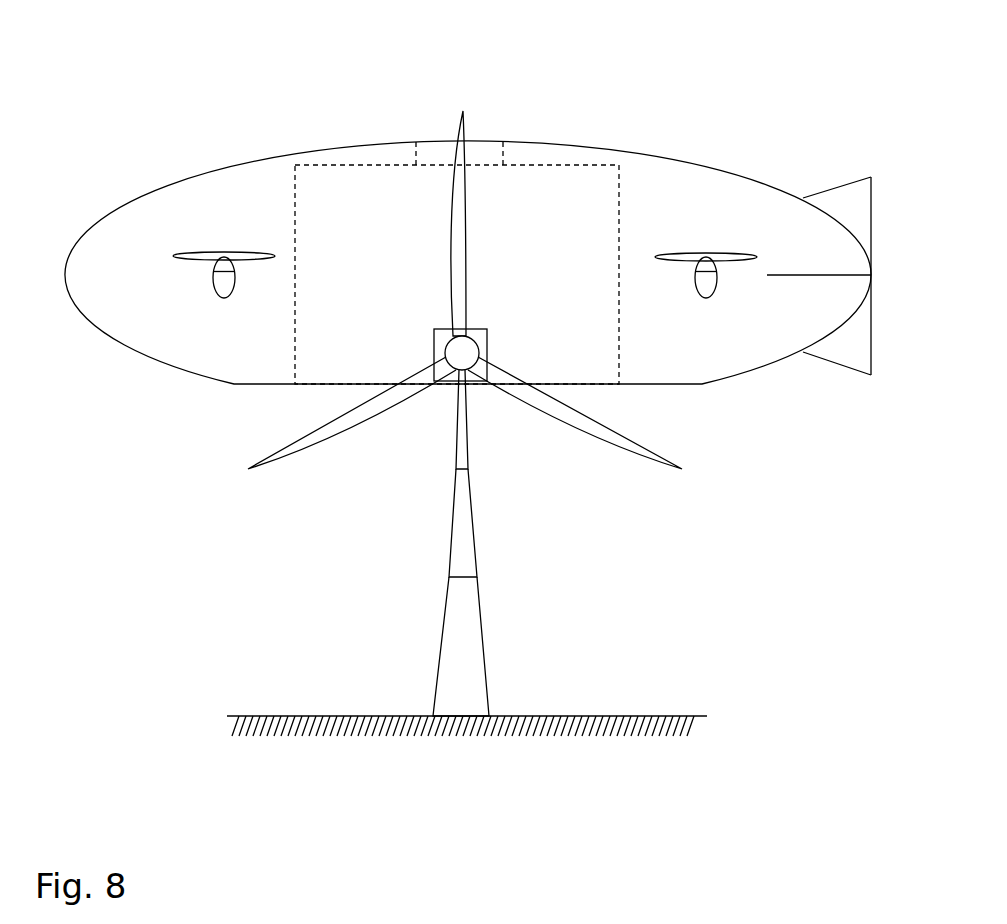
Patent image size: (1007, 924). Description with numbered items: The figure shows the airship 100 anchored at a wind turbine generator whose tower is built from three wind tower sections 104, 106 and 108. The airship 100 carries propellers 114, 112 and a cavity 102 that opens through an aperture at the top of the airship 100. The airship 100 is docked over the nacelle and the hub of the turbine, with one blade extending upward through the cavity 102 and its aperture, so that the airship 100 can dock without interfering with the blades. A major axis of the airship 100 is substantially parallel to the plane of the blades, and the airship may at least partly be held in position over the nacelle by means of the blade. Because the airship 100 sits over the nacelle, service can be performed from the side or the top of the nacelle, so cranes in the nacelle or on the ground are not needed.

The airship 100 is at (192, 198).
The cavity 102 is at (591, 292).
The wind tower section 104 is at (471, 637).
The wind tower section 106 is at (467, 540).
The wind tower section 108 is at (465, 451).
The propeller 112 is at (727, 253).
The propeller 114 is at (252, 253).